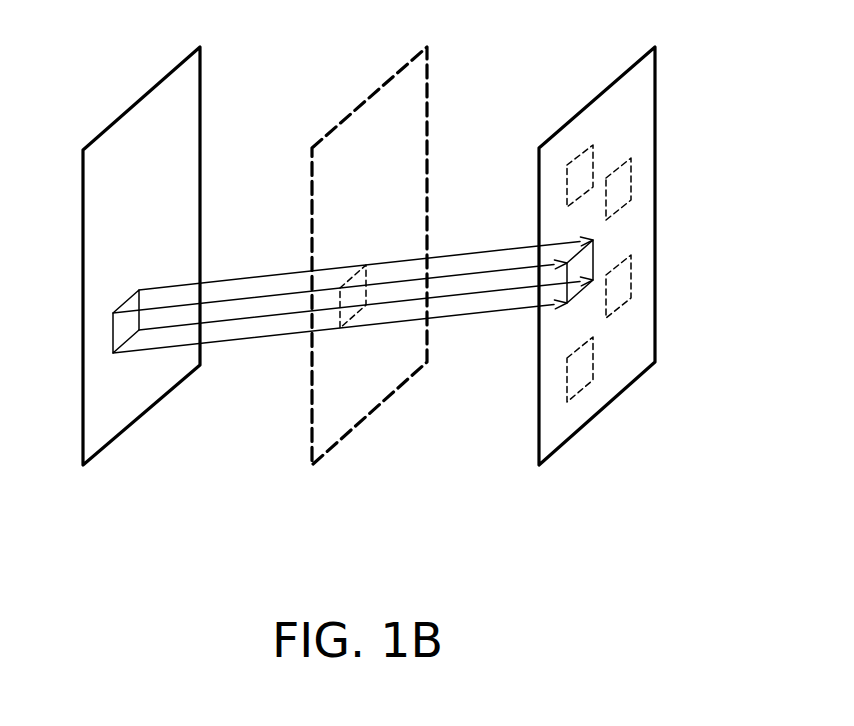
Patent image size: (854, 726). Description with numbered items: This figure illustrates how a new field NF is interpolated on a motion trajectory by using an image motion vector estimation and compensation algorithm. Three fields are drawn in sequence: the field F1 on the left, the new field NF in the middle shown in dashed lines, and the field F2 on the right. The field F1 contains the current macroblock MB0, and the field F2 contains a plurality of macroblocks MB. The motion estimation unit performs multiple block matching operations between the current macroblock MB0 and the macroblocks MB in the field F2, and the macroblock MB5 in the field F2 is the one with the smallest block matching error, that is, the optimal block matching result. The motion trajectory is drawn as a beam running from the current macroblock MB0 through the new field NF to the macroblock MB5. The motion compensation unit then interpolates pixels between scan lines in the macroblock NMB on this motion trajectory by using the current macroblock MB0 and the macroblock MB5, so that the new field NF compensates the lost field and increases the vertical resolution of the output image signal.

The field F1 is at (147, 412).
The new field NF is at (372, 412).
The field F2 is at (600, 412).
The current macroblock MB0 is at (122, 302).
The macroblock NMB is at (340, 288).
The macroblock MB5 is at (595, 258).
The macroblocks MB is at (593, 172).